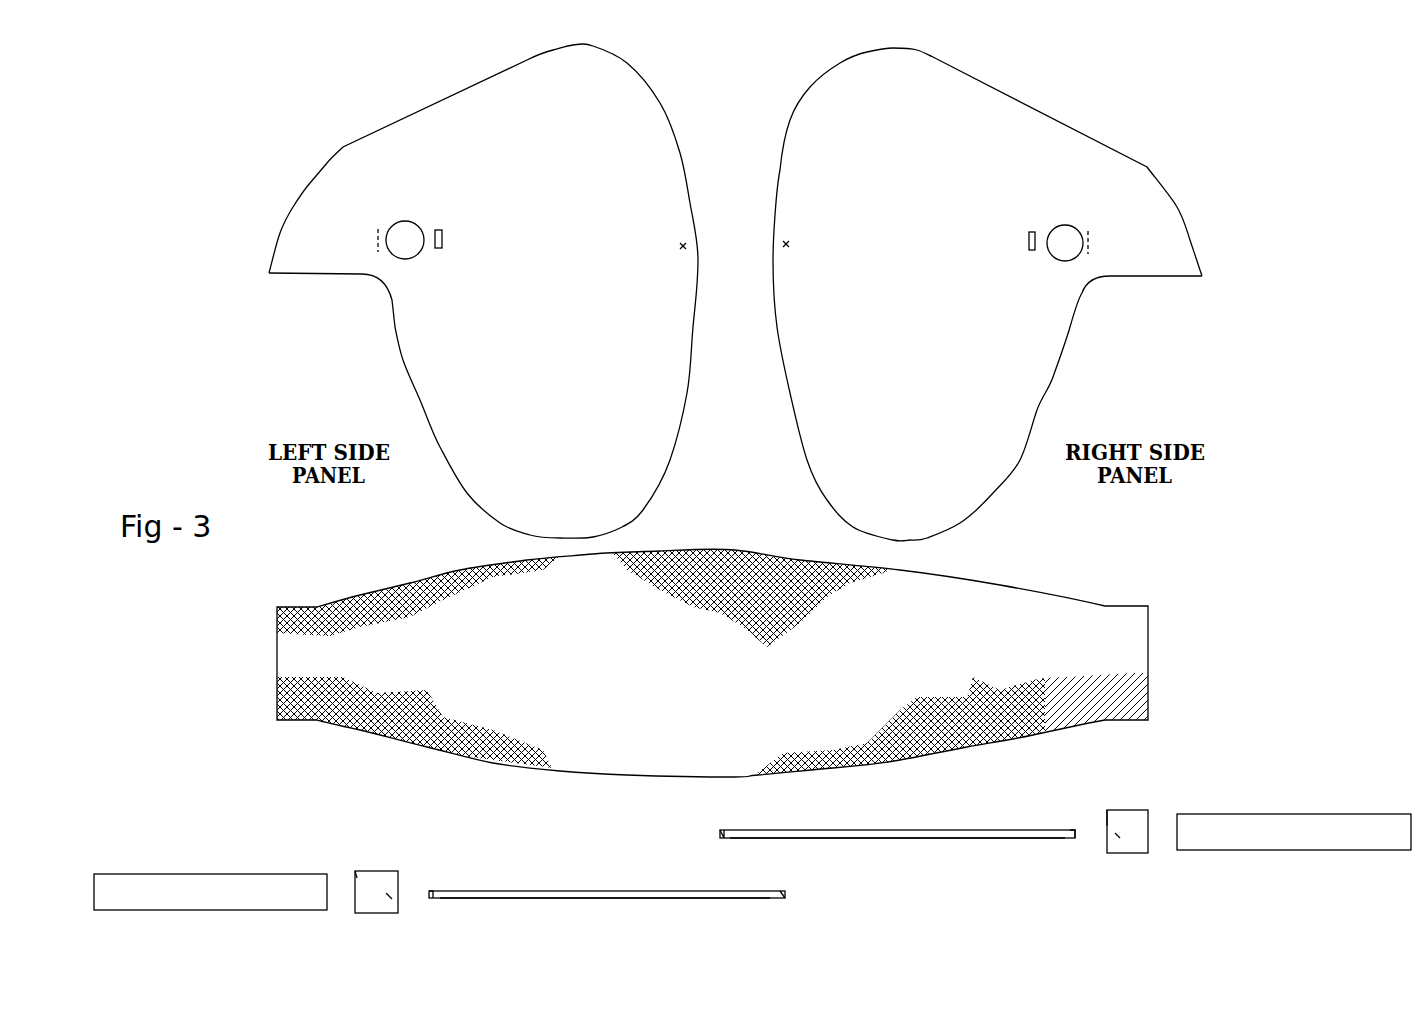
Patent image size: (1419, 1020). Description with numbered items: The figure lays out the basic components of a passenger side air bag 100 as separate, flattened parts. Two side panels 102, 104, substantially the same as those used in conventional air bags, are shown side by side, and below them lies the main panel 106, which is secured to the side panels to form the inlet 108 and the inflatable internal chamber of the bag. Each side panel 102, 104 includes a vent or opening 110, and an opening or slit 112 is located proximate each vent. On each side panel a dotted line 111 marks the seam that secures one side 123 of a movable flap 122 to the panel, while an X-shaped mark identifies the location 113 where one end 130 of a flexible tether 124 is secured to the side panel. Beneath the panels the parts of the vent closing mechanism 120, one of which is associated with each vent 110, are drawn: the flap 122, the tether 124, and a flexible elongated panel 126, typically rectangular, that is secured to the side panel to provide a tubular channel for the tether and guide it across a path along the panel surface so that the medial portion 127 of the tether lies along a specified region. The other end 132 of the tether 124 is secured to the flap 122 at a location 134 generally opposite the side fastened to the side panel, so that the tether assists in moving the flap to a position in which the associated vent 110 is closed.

The passenger side air bag 100 is at (738, 90).
The side panel 102 is at (532, 95).
The side panel 104 is at (842, 135).
The main panel 106 is at (1020, 623).
The inlet 108 is at (332, 274).
The vent 110 is at (408, 221).
The dotted line 111 is at (375, 238).
The slit 112 is at (440, 231).
The location 113 is at (683, 244).
The vent closing mechanism 120 is at (488, 855).
The movable flap 122 is at (373, 896).
The side of flap 123 is at (355, 873).
The flexible tether 124 is at (612, 890).
The flexible elongated panel 126 is at (125, 880).
The medial portion 127 is at (587, 899).
The end of tether 130 is at (782, 897).
The end of tether 132 is at (433, 891).
The location 134 is at (390, 895).